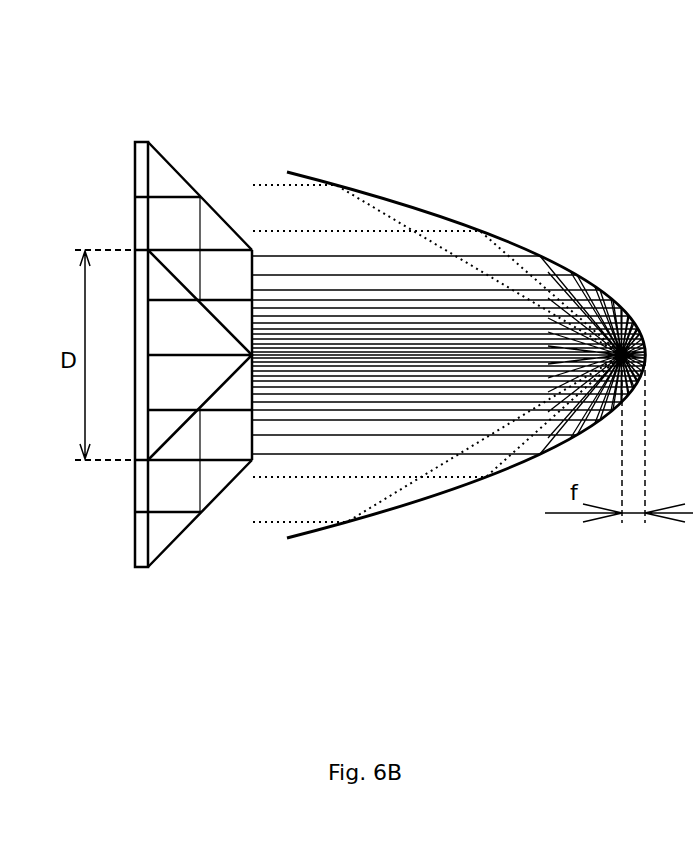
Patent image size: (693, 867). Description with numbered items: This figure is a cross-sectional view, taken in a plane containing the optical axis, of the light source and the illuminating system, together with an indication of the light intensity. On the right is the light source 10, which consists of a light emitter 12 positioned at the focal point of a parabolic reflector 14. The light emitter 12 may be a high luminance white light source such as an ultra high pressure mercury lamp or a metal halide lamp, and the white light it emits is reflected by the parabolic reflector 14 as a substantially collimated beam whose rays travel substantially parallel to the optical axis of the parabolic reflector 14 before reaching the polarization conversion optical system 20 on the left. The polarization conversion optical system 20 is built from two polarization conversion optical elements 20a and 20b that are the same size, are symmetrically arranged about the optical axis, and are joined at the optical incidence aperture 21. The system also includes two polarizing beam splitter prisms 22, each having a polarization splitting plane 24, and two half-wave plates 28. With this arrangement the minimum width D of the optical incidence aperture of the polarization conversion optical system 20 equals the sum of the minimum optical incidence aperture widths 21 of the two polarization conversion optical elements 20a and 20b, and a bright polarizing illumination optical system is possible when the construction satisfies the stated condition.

The light source 10 is at (449, 330).
The light emitter 12 is at (610, 303).
The parabolic reflector 14 is at (422, 499).
The polarization conversion optical system 20 is at (194, 325).
The polarization conversion optical element 20a is at (234, 168).
The polarization conversion optical element 20b is at (236, 529).
The optical incidence aperture 21 is at (254, 257).
The polarizing beam splitter prism 22 is at (170, 165).
The polarization splitting plane 24 is at (170, 280).
The half-wave plate 28 is at (134, 142).